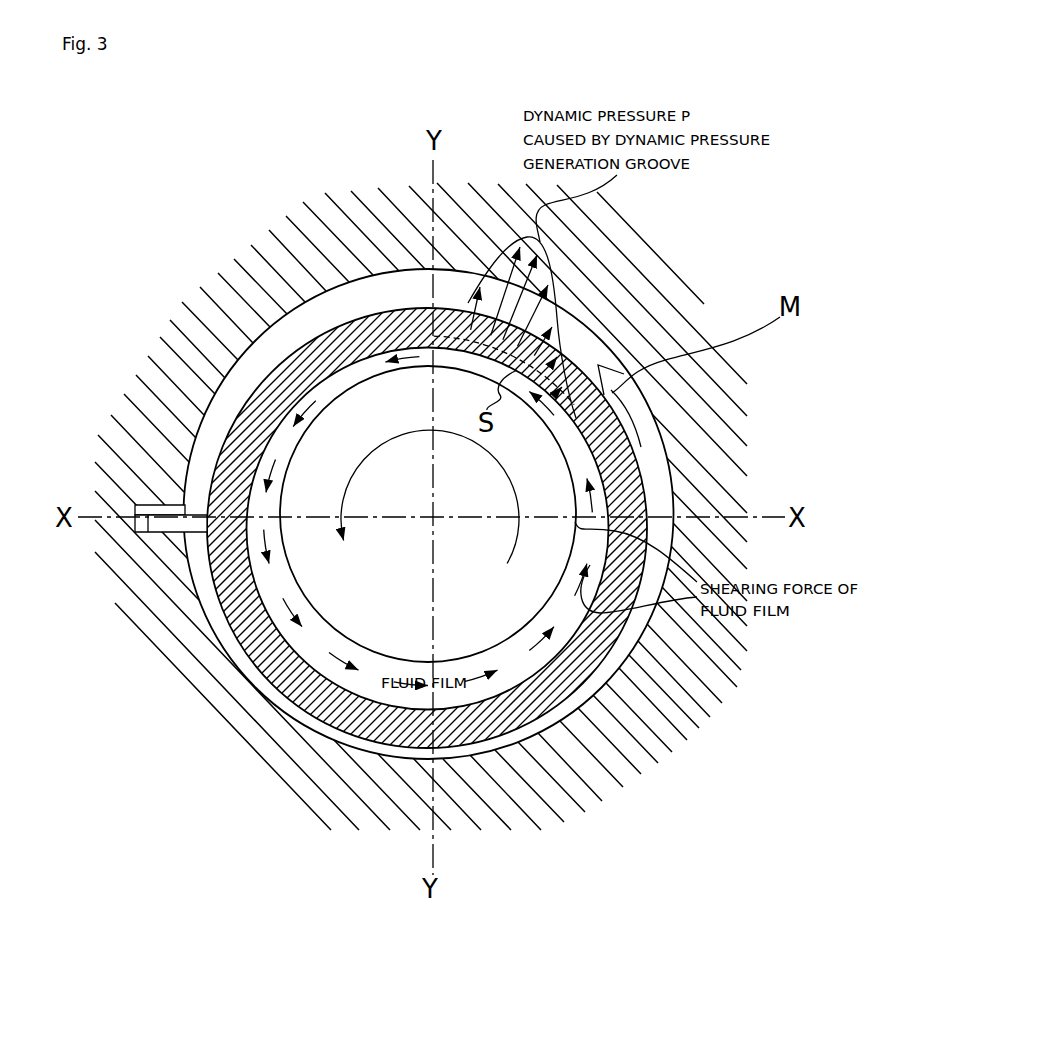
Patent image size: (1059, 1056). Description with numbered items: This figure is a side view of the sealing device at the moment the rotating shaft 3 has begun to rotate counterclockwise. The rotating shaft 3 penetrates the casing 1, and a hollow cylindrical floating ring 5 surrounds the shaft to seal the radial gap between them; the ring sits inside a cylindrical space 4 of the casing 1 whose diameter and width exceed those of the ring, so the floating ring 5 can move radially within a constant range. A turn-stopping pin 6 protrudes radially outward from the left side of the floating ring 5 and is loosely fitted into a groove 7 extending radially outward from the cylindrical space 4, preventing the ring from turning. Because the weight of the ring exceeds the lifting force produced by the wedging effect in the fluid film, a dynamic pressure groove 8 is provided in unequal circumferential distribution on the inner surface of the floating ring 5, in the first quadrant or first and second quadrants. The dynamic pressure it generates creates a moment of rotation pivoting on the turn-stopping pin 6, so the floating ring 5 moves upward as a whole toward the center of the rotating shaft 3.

The casing 1 is at (383, 202).
The rotating shaft 3 is at (490, 612).
The cylindrical space 4 is at (308, 300).
The floating ring 5 is at (648, 488).
The turn-stopping pin 6 is at (140, 532).
The groove 7 is at (135, 508).
The dynamic pressure groove 8 is at (553, 317).